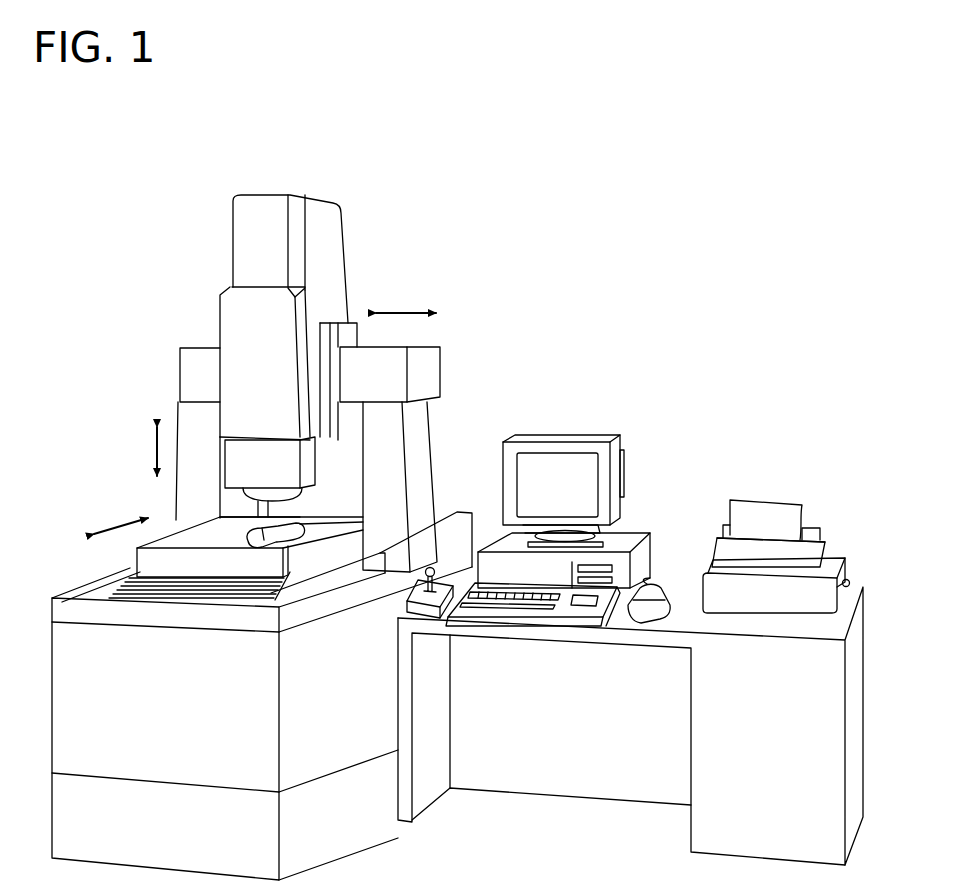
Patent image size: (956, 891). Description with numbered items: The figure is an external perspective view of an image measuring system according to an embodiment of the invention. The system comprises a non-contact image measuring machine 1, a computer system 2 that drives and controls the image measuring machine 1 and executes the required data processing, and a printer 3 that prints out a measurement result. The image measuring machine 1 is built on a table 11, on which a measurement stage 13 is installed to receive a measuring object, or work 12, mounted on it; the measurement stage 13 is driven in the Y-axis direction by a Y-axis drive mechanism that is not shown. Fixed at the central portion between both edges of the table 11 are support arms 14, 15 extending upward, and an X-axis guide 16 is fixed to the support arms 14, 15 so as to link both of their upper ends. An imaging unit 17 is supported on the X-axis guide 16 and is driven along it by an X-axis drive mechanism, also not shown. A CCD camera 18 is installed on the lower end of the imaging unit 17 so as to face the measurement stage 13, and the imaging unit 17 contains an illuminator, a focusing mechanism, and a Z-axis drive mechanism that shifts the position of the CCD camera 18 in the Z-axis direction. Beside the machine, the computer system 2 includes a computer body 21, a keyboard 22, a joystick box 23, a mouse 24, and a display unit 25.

The image measuring machine 1 is at (364, 219).
The computer system 2 is at (632, 425).
The printer 3 is at (792, 480).
The table 11 is at (98, 580).
The work 12 is at (281, 538).
The measurement stage 13 is at (217, 530).
The support arm 14 is at (175, 418).
The support arm 15 is at (422, 452).
The X-axis guide 16 is at (197, 347).
The imaging unit 17 is at (232, 232).
The CCD camera 18 is at (281, 500).
The computer body 21 is at (627, 533).
The keyboard 22 is at (547, 610).
The joystick box 23 is at (418, 597).
The mouse 24 is at (642, 610).
The display unit 25 is at (613, 478).